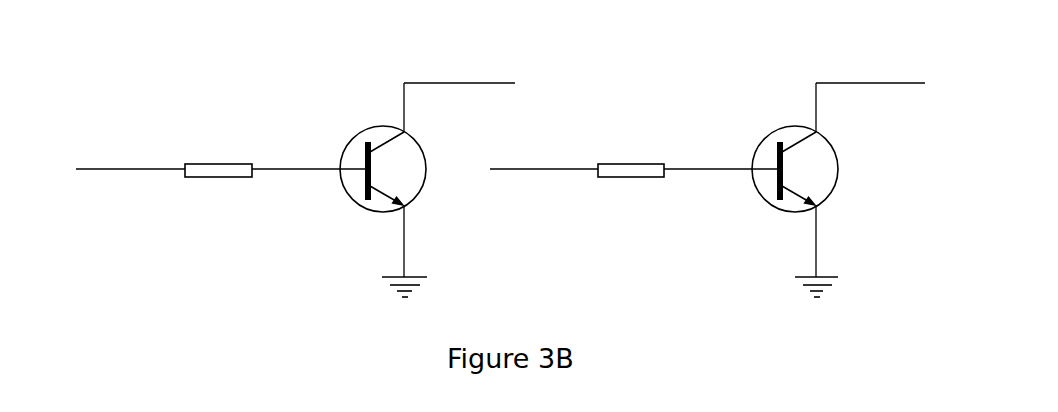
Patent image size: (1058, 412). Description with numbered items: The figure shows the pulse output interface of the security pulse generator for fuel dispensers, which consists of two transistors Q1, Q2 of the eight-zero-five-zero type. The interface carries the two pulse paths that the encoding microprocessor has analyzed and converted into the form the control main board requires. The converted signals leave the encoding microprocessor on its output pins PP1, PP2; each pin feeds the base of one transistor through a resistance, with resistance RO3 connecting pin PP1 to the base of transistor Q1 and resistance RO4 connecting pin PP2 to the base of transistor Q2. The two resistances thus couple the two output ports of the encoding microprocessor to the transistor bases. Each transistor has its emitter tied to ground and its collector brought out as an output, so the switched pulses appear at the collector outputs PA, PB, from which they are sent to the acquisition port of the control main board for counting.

The output pin PP1 is at (130, 155).
The output pin PP2 is at (544, 155).
The resistance RO3 is at (275, 171).
The resistance RO4 is at (688, 176).
The 8050 transistor Q1 is at (401, 188).
The 8050 transistor Q2 is at (813, 188).
The output terminal PA is at (459, 73).
The output terminal PB is at (870, 73).